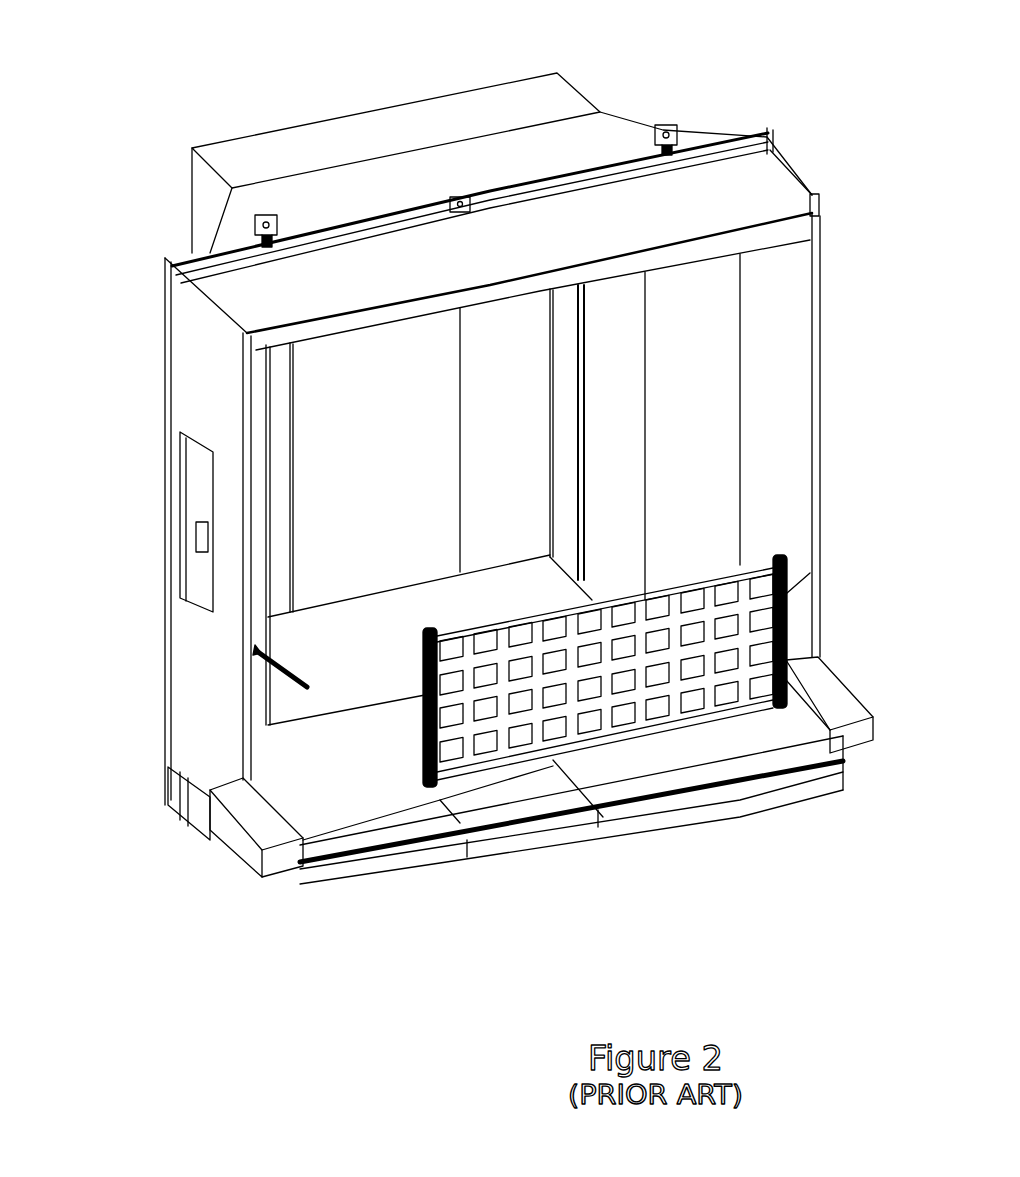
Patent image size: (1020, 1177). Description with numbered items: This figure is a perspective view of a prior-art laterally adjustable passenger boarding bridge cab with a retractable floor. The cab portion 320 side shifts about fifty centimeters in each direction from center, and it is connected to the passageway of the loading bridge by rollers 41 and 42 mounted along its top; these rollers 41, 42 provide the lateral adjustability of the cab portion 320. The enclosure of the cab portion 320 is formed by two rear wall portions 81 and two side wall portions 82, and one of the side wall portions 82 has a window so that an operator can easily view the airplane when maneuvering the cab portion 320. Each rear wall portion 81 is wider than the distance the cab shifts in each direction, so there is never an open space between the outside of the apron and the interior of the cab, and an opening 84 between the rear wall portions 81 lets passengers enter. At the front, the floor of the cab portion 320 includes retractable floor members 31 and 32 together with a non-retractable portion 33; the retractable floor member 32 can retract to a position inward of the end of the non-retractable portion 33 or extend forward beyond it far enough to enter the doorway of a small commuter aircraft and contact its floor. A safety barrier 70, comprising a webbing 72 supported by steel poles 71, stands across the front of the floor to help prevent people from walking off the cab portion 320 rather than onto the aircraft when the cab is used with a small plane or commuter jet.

The cab portion 320 is at (157, 480).
The roller 41 is at (260, 227).
The roller 42 is at (666, 128).
The opening 84 is at (382, 398).
The rear wall portion 81 is at (282, 462).
The side wall portion 82 is at (615, 397).
The safety barrier 70 is at (422, 700).
The steel pole 71 is at (787, 610).
The webbing 72 is at (642, 695).
The retractable floor member 31 is at (453, 863).
The retractable floor member 32 is at (397, 867).
The non-retractable portion of the floor 33 is at (720, 805).